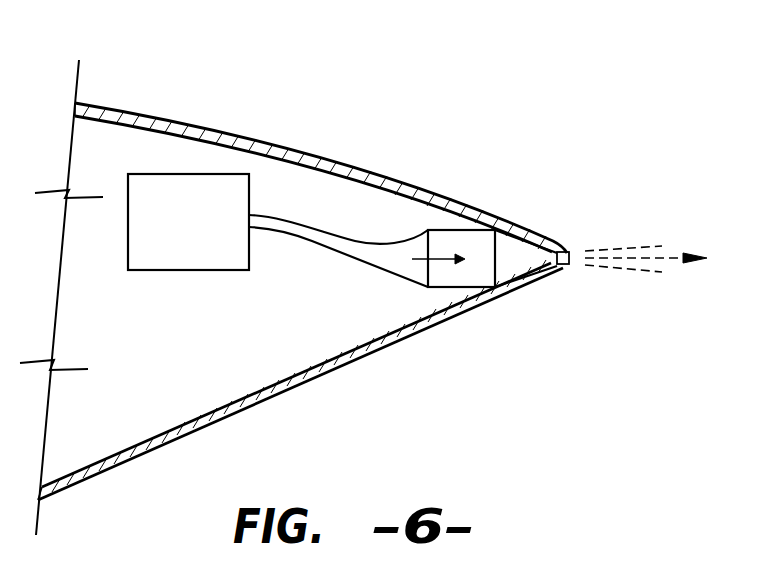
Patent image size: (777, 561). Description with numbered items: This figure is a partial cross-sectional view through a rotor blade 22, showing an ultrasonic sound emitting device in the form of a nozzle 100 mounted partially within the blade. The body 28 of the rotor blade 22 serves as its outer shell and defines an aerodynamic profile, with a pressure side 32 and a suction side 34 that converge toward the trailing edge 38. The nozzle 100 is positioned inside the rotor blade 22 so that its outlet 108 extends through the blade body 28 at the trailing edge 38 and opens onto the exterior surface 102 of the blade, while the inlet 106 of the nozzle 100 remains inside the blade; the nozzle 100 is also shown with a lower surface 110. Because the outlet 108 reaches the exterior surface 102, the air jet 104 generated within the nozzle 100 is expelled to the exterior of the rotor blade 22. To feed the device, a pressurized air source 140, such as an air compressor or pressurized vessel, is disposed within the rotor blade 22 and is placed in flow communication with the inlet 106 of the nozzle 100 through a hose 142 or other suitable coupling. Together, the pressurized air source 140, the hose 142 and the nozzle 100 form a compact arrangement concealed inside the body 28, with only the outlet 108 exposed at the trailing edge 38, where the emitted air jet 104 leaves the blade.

The rotor blade 22 is at (524, 88).
The body 28 is at (275, 139).
The pressure side 32 is at (296, 385).
The suction side 34 is at (153, 120).
The trailing edge 38 is at (566, 270).
The nozzle 100 is at (436, 221).
The exterior surface 102 is at (547, 236).
The air jet 104 is at (633, 247).
The inlet 106 is at (427, 247).
The outlet 108 is at (569, 258).
The lower surface 110 is at (523, 287).
The pressurized air source 140 is at (211, 229).
The hose 142 is at (374, 269).